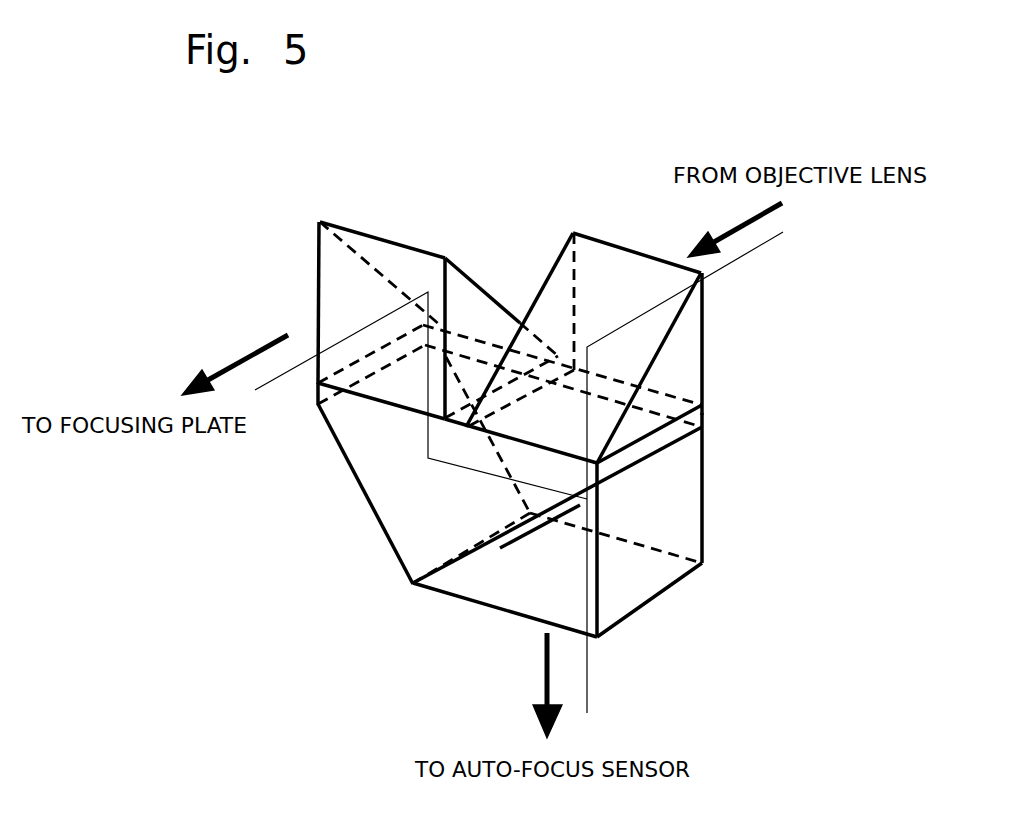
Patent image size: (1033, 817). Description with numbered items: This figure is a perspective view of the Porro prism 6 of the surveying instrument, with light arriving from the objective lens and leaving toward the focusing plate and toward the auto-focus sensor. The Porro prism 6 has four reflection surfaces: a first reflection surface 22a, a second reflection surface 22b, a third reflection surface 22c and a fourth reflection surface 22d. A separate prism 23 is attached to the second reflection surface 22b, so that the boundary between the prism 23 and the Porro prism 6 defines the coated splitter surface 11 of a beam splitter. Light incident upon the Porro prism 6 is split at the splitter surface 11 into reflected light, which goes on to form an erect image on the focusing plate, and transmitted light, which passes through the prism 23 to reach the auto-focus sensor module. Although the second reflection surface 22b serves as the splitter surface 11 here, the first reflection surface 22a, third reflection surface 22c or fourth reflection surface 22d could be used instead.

The Porro prism 6 is at (564, 423).
The splitter surface 11 is at (540, 530).
The first reflection surface 22a is at (637, 355).
The second reflection surface 22b is at (627, 477).
The third reflection surface 22c is at (392, 488).
The fourth reflection surface 22d is at (413, 270).
The prism 23 is at (690, 527).